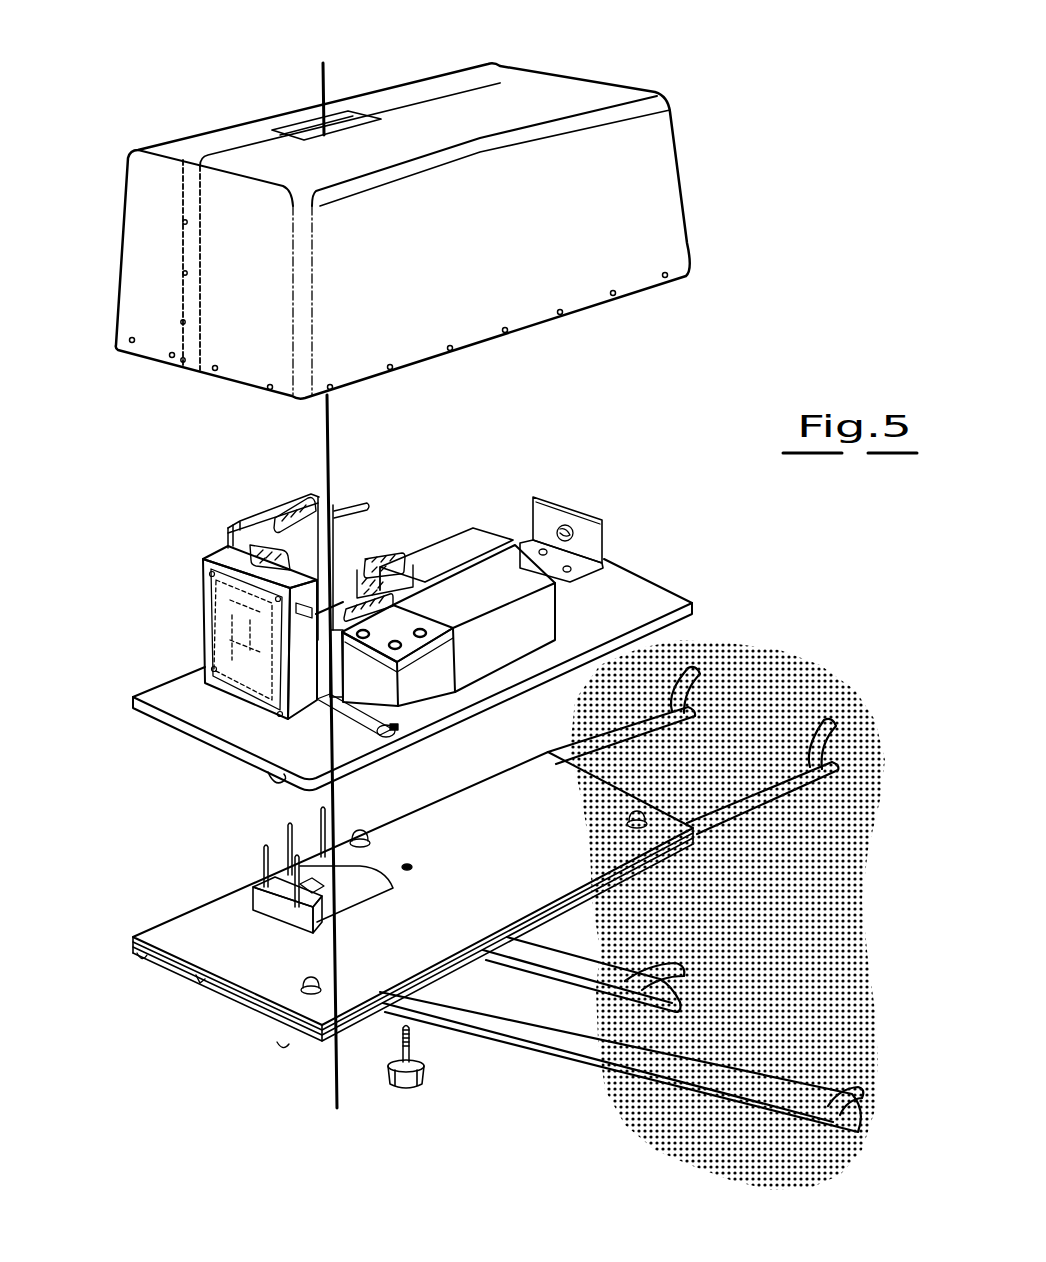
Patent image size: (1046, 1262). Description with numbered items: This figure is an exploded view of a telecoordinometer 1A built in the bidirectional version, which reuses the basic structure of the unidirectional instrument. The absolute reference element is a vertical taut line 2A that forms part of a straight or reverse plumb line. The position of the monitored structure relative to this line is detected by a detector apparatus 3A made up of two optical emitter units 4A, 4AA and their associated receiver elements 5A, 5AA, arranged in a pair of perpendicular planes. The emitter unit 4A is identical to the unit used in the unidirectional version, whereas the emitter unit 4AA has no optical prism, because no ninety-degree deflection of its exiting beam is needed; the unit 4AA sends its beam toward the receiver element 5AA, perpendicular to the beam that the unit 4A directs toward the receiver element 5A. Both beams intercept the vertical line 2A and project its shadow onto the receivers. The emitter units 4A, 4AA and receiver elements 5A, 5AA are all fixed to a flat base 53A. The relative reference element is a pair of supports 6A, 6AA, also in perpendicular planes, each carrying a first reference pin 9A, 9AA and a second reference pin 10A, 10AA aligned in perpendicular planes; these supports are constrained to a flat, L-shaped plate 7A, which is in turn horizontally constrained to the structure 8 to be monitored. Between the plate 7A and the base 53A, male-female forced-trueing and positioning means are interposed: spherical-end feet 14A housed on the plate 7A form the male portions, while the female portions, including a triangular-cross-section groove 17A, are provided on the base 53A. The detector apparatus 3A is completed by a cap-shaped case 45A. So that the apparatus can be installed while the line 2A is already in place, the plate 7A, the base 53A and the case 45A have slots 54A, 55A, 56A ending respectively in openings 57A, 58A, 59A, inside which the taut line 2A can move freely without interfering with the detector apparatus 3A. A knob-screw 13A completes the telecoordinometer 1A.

The telecoordinometer 1A is at (76, 84).
The vertical taut line 2A is at (325, 455).
The detector apparatus 3A is at (652, 512).
The optical emitter unit 4A is at (542, 633).
The optical emitter unit 4AA is at (427, 550).
The receiver element 5A is at (256, 527).
The receiver element 5AA is at (204, 645).
The support 6A is at (272, 905).
The support 6AA is at (313, 880).
The flat plate 7A is at (548, 853).
The structure to be monitored 8 is at (810, 985).
The first reference pin 9A is at (288, 830).
The first reference pin 9AA is at (296, 908).
The second reference pin 10A is at (268, 779).
The second reference pin 10AA is at (264, 857).
The knob-screw 13A is at (394, 1089).
The spherical-end feet 14A is at (361, 828).
The triangular-cross-section groove 17A is at (265, 772).
The cap-shaped case 45A is at (555, 86).
The flat base 53A is at (658, 598).
The slot 54A is at (200, 983).
The slot 55A is at (400, 737).
The slot 56A is at (187, 248).
The opening 57A is at (353, 873).
The opening 58A is at (325, 677).
The opening 59A is at (297, 123).